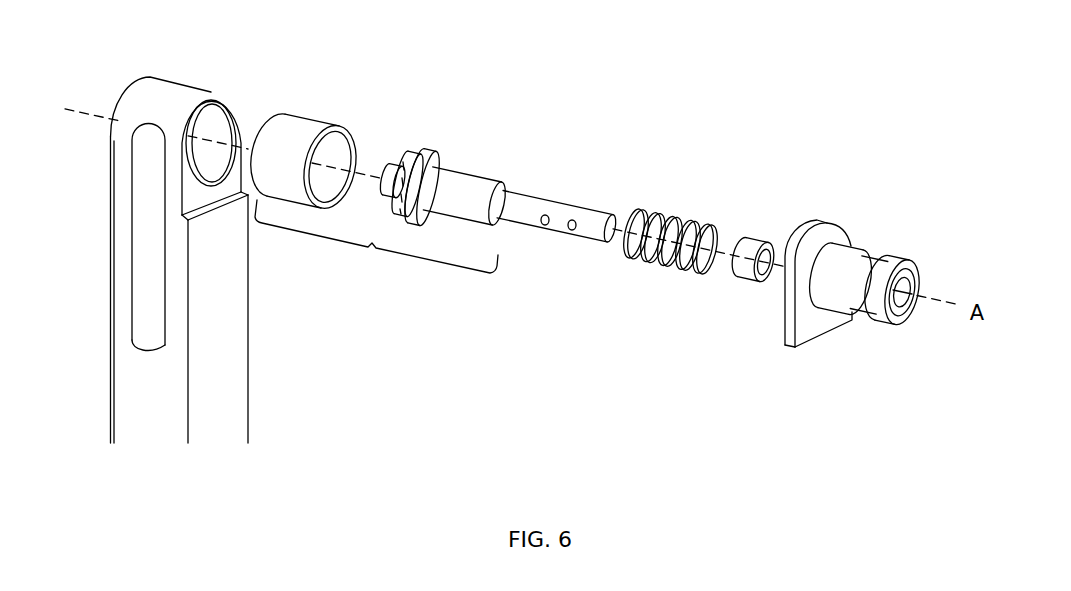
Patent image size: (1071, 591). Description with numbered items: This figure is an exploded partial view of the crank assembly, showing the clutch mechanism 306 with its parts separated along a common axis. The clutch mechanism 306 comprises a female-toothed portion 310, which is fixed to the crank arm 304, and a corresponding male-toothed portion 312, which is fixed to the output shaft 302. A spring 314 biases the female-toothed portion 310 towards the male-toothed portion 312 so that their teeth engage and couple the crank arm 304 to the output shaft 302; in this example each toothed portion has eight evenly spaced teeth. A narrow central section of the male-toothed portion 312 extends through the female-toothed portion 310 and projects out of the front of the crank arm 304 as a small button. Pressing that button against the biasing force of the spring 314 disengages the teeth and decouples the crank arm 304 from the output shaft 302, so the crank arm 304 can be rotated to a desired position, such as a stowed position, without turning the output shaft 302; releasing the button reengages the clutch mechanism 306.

The output shaft 302 is at (583, 224).
The crank arm 304 is at (158, 408).
The clutch mechanism 306 is at (371, 247).
The female-toothed portion 310 is at (292, 147).
The male-toothed portion 312 is at (410, 170).
The spring 314 is at (650, 262).